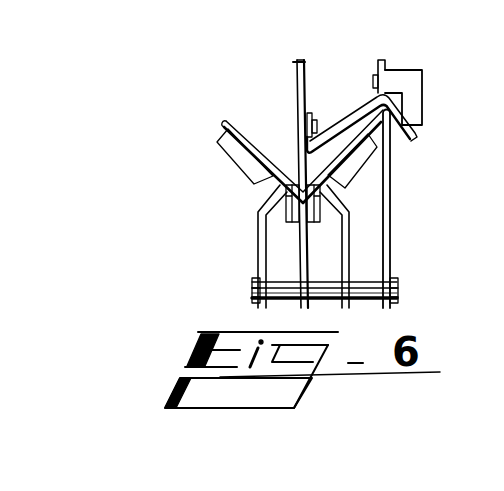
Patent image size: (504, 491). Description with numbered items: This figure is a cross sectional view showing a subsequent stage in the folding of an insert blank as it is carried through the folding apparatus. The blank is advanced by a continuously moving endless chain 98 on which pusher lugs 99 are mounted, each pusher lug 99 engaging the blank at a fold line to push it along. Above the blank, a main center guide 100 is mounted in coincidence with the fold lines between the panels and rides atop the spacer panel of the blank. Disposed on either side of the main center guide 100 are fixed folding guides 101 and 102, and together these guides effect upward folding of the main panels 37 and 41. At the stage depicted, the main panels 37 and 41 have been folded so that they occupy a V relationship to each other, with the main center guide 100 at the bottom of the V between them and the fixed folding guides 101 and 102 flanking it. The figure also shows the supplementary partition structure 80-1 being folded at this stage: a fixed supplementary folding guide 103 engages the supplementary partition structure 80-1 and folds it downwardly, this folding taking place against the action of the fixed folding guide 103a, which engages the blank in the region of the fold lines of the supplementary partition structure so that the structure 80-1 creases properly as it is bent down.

The main center guide 100 is at (305, 71).
The fixed folding guide 101 is at (257, 242).
The fixed folding guide 102 is at (350, 243).
The pusher lug 99 is at (286, 224).
The endless chain 98 is at (312, 225).
The main panel 37 is at (251, 140).
The main panel 41 is at (356, 143).
The fixed folding guide 103a is at (392, 209).
The fixed supplementary folding guide 103 is at (400, 77).
The supplementary partition structure 80-1 is at (408, 143).